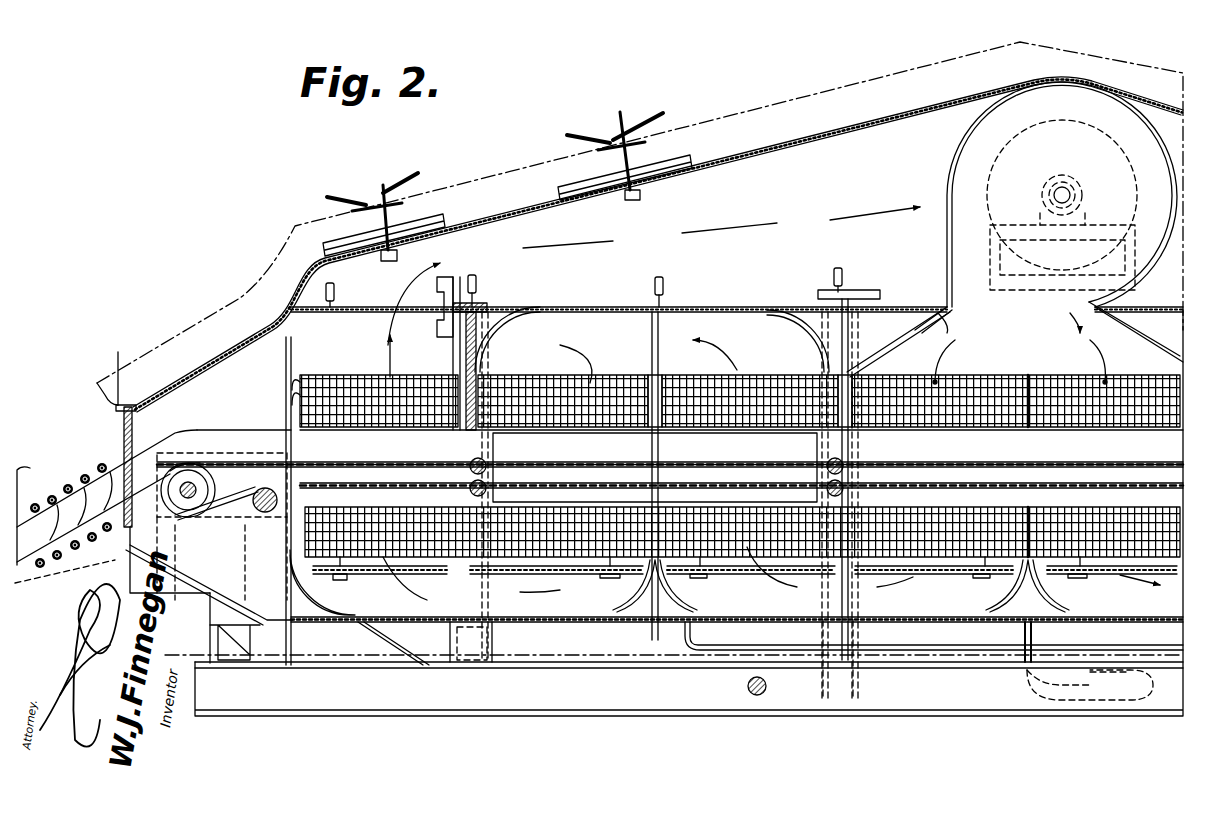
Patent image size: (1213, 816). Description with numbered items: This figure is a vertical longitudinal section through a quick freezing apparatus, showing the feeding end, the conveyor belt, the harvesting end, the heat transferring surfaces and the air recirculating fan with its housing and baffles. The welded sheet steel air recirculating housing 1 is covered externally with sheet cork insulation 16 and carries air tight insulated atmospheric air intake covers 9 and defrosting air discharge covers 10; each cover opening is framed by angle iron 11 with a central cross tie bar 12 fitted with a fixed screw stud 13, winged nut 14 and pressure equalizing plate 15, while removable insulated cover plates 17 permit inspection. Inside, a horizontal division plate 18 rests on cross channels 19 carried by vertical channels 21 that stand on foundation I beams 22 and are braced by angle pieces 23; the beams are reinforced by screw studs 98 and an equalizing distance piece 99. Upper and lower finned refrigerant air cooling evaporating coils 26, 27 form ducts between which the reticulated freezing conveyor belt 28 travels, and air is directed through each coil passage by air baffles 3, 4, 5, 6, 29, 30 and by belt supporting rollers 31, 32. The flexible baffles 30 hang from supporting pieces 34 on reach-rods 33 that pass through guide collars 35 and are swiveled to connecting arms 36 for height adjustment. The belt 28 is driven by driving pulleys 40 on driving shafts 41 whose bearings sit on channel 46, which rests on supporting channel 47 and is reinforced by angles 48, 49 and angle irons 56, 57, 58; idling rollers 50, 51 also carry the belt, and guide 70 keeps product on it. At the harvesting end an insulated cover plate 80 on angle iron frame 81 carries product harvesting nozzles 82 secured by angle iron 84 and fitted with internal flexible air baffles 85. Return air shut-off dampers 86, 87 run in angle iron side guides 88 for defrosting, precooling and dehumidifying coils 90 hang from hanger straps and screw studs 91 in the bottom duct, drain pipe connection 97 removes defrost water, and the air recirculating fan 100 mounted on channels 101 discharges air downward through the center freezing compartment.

The air recirculating housing 1 is at (262, 348).
The air directional flow baffle 3 is at (535, 340).
The air directional flow baffle 4 is at (622, 615).
The air directional flow baffle 5 is at (998, 598).
The air directional flow baffle 6 is at (896, 340).
The atmospheric air intake cover 9 is at (690, 155).
The defrosting air discharge cover 10 is at (330, 215).
The angle iron 11 is at (430, 215).
The cross tie bar 12 is at (642, 195).
The fixed screw stud 13 is at (385, 185).
The winged nut 14 is at (400, 187).
The pressure equalizing plate 15 is at (354, 198).
The insulation 16 is at (180, 345).
The removable insulated cover plate 17 is at (500, 445).
The horizontal division plate 18 is at (396, 255).
The cross channel 19 is at (538, 312).
The vertical channel 21 is at (492, 640).
The foundation I beam 22 is at (494, 718).
The angle piece 23 is at (515, 325).
The refrigerant air cooling evaporating coil 26 is at (758, 375).
The refrigerant air cooling evaporating coil 27 is at (428, 585).
The freezing conveyor belt 28 is at (362, 462).
The air baffle 29 is at (665, 470).
The air baffle 30 is at (290, 443).
The conveyor belt supporting roller 31 is at (468, 468).
The conveyor belt supporting roller 32 is at (468, 490).
The reach-rod 33 is at (662, 340).
The supporting piece 34 is at (662, 378).
The guide collar 35 is at (490, 305).
The connecting arm 36 is at (336, 292).
The driving pulley 40 is at (188, 462).
The driving shaft 41 is at (192, 484).
The channel 46 is at (170, 440).
The supporting channel 47 is at (205, 610).
The angle 48 is at (150, 560).
The angle 49 is at (232, 645).
The idling roller 50 is at (252, 494).
The idling roller 51 is at (292, 645).
The angle iron 56 is at (260, 555).
The angle iron 57 is at (262, 572).
The angle iron 58 is at (375, 642).
The guide 70 is at (284, 425).
The insulated cover plate 80 is at (108, 390).
The angle iron frame 81 is at (118, 352).
The product harvesting nozzle 82 is at (20, 485).
The angle iron 84 is at (124, 428).
The internal flexible air baffle 85 is at (88, 485).
The return air shut-off damper 86 is at (283, 402).
The return air shut-off damper 87 is at (58, 470).
The angle iron side guide 88 is at (440, 296).
The recirculated air precooling and dehumidifying coil 90 is at (572, 578).
The hanger strap and screw stud 91 is at (606, 580).
The drain pipe connection 97 is at (838, 665).
The screw stud 98 is at (748, 688).
The equalizing distance piece 99 is at (766, 686).
The air recirculating fan 100 is at (1110, 86).
The channel 101 is at (935, 290).